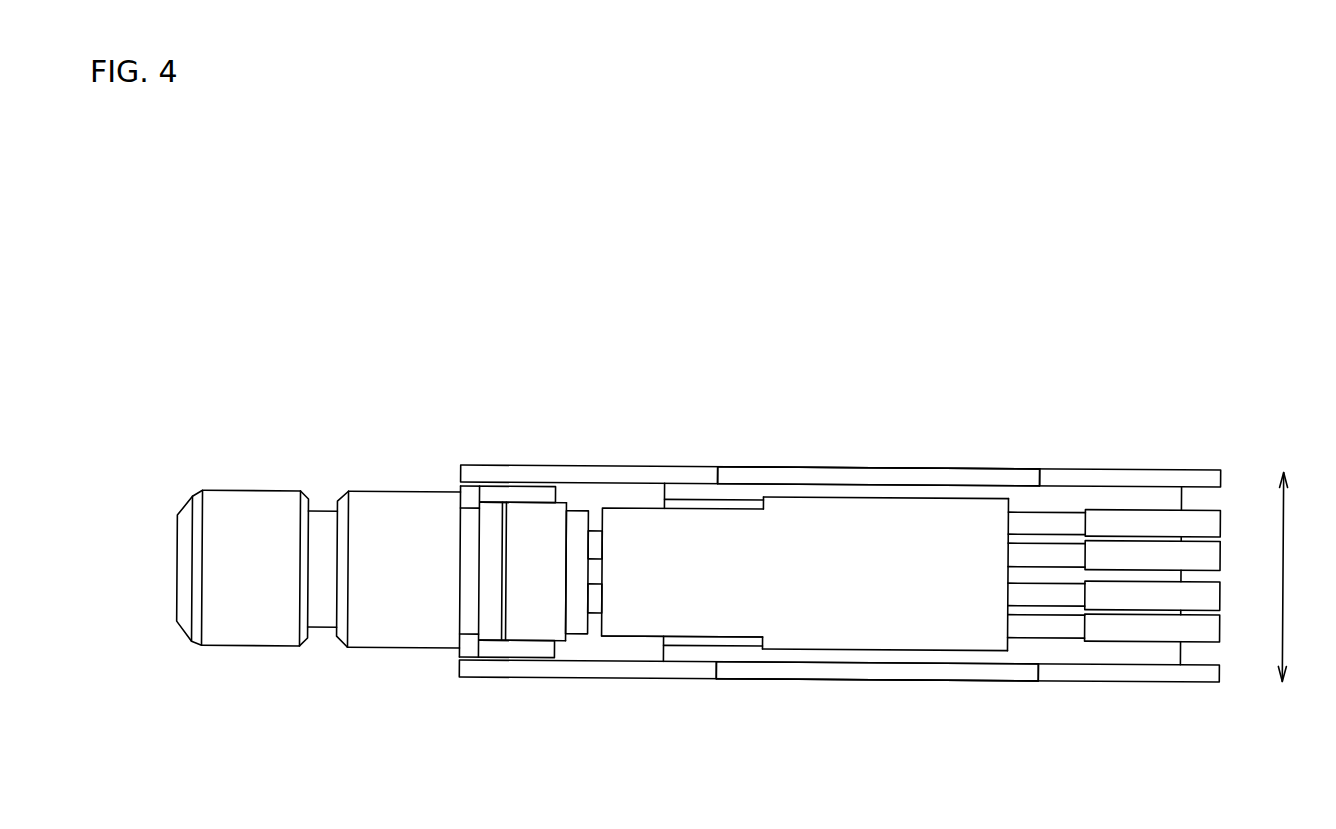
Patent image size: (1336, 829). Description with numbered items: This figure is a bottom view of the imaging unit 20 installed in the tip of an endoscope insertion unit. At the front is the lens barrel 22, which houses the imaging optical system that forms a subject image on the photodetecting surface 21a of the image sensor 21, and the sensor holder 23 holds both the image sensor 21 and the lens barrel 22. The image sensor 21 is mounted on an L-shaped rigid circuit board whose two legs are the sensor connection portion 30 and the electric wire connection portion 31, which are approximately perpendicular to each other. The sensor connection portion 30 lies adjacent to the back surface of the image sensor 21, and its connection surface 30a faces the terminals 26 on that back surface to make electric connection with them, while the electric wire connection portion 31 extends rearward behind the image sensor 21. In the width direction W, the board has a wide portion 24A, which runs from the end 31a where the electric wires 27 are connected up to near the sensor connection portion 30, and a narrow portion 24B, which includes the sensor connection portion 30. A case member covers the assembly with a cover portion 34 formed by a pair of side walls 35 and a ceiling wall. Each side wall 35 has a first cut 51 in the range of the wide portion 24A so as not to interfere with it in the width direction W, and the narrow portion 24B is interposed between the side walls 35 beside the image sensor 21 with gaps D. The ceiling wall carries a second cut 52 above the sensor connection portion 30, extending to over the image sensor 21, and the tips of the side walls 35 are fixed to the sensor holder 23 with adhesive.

The imaging unit 20 is at (430, 317).
The image sensor 21 is at (533, 517).
The photodetecting surface 21a is at (502, 582).
The lens barrel 22 is at (243, 493).
The sensor holder 23 is at (395, 493).
The wide portion 24A is at (948, 491).
The narrow portion 24B is at (652, 505).
The terminals 26 is at (592, 519).
The electric wires 27 is at (1220, 550).
The sensor connection portion 30 is at (613, 506).
The connection surface 30a is at (598, 635).
The electric wire connection portion 31 is at (820, 493).
The end 31a is at (1010, 516).
The cover portion 34 is at (966, 688).
The side walls 35 is at (842, 466).
The first cut 51 is at (889, 479).
The second cut 52 is at (573, 491).
The gaps D is at (631, 496).
The width direction W is at (1295, 576).